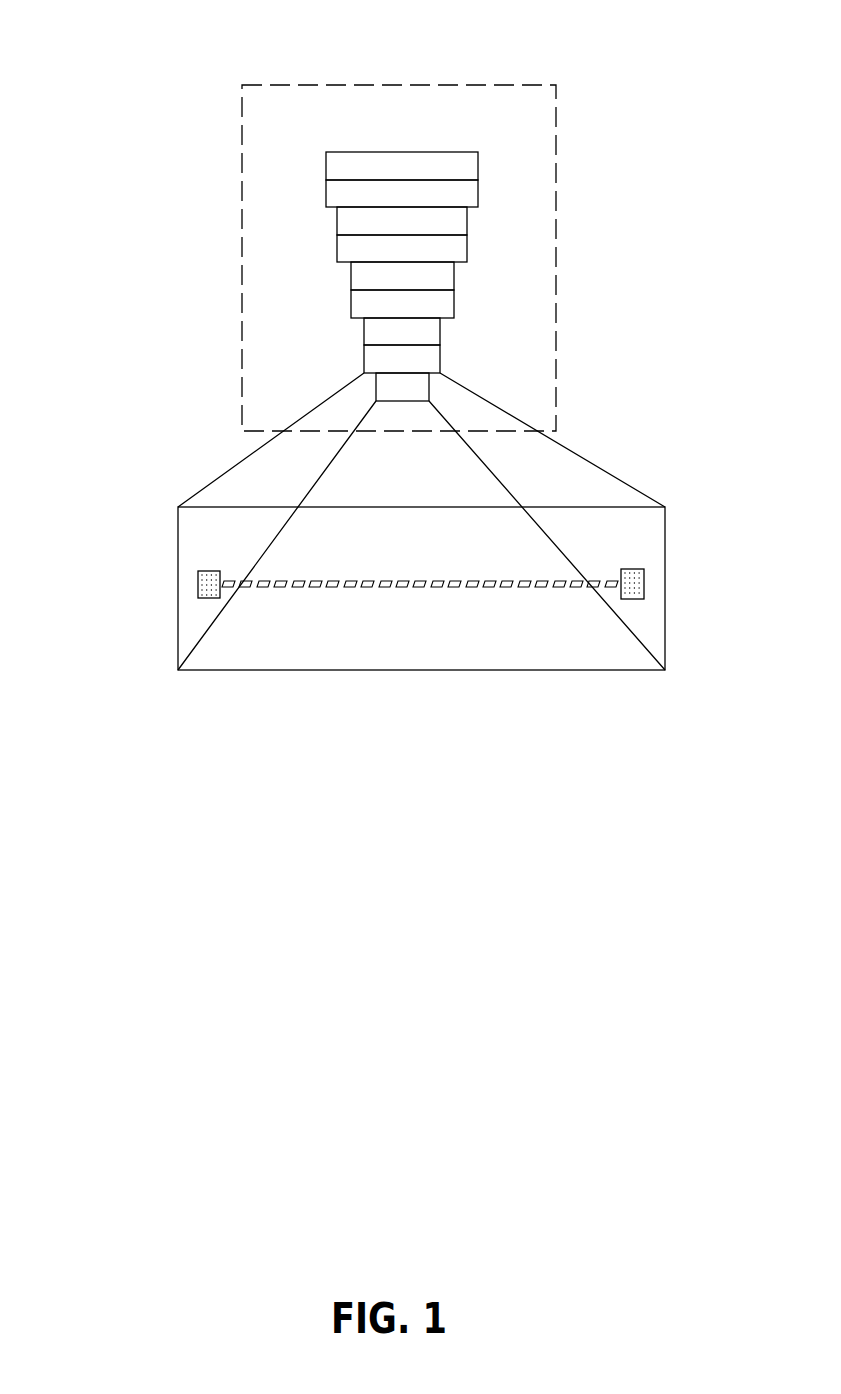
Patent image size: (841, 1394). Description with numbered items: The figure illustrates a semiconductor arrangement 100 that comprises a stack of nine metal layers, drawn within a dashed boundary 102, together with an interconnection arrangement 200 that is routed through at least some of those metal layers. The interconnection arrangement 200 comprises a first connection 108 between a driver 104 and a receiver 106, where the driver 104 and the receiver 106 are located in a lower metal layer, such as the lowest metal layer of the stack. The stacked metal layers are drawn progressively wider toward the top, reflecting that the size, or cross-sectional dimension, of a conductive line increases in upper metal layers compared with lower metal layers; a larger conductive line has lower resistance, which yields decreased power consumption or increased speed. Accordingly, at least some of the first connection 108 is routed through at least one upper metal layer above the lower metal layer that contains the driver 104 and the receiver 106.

The semiconductor arrangement 100 is at (128, 68).
The metallization stack (M1-M9 interconnect layers) 102 is at (556, 133).
The driver 104 is at (214, 575).
The receiver 106 is at (628, 579).
The first connection 108 is at (370, 590).
The interconnection arrangement 200 is at (665, 528).